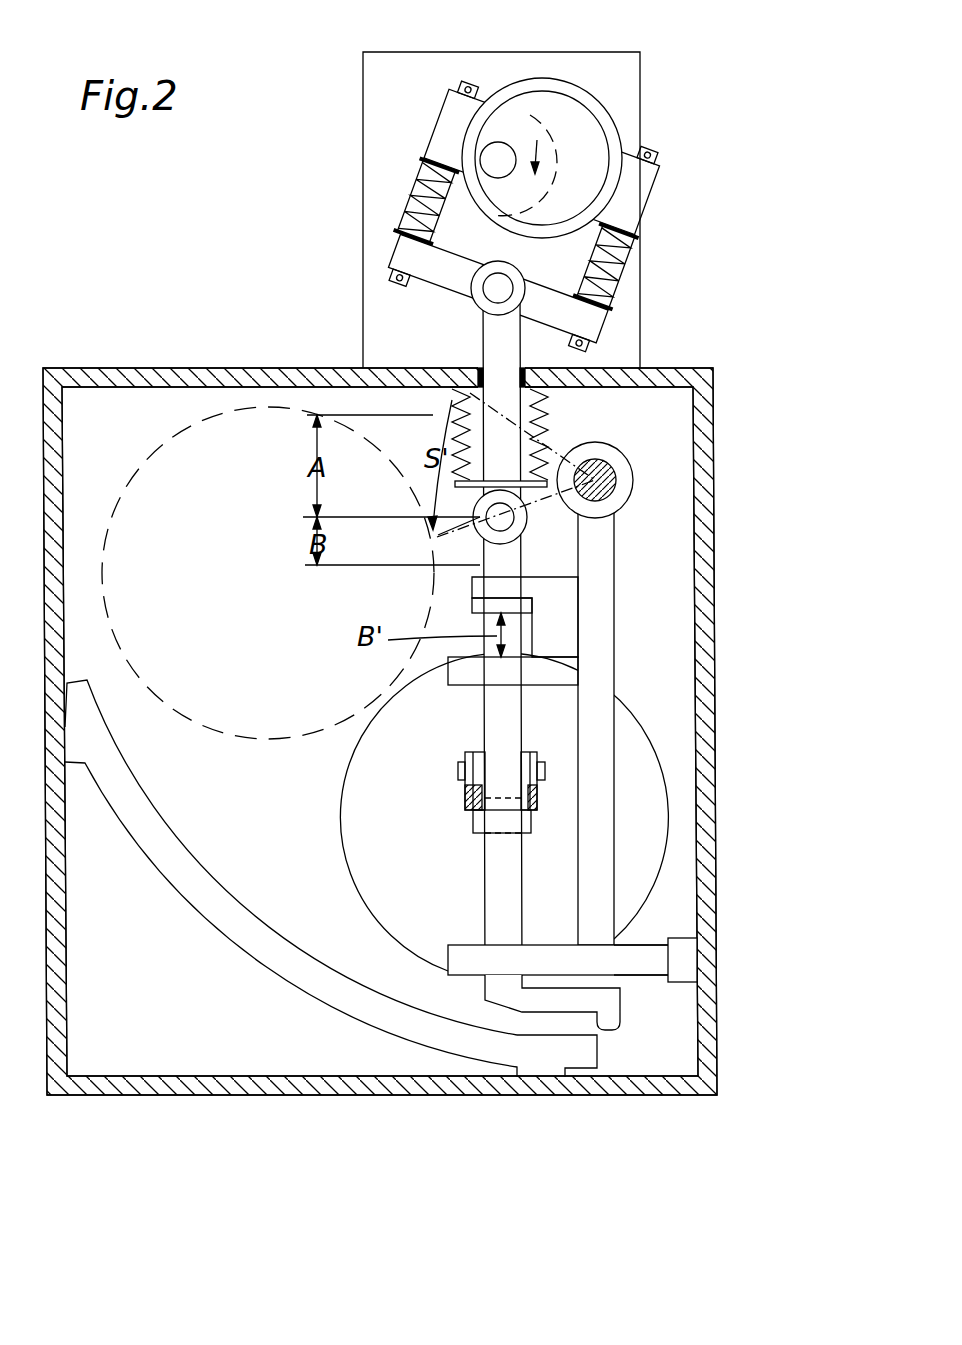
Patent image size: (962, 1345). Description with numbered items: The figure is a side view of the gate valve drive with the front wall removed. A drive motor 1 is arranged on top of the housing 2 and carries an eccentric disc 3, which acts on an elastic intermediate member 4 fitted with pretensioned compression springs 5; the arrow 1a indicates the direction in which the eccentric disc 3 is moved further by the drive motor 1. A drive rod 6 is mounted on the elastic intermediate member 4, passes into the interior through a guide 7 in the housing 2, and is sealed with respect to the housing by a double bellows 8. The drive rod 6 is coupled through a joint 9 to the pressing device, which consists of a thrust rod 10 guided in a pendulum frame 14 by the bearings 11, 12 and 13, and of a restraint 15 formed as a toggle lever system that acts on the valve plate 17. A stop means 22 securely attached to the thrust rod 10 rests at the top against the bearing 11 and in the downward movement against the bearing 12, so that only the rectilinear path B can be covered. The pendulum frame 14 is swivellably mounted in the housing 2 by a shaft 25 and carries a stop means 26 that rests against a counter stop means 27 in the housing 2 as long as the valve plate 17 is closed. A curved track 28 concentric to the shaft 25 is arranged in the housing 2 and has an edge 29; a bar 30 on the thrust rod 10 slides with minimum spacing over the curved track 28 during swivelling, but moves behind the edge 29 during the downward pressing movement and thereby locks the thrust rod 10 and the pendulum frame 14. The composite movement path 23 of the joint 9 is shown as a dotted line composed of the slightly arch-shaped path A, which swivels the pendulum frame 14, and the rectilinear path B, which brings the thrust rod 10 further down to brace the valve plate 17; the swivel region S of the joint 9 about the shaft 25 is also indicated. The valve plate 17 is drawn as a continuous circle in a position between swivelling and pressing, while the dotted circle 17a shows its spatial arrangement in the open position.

The drive motor 1 is at (622, 117).
The arrow 1a is at (537, 140).
The housing 2 is at (143, 380).
The eccentric disc 3 is at (598, 160).
The elastic intermediate member 4 is at (621, 288).
The compression springs 5 is at (410, 213).
The drive rod 6 is at (495, 320).
The guide 7 is at (530, 370).
The double bellows 8 is at (543, 397).
The joint 9 is at (527, 520).
The thrust rod 10 is at (512, 728).
The bearing 11 is at (508, 590).
The bearing 12 is at (512, 675).
The bearing 13 is at (485, 962).
The pendulum frame 14 is at (593, 815).
The restraint 15 is at (551, 770).
The valve plate 17 is at (630, 897).
The dotted circle 17a is at (272, 407).
The stop means 22 is at (512, 607).
The composite movement path 23 is at (543, 437).
The shaft 25 is at (633, 482).
The stop means 26 is at (650, 963).
The counter stop means 27 is at (687, 955).
The curved track 28 is at (347, 1000).
The edge 29 is at (606, 1060).
The bar 30 is at (610, 1013).